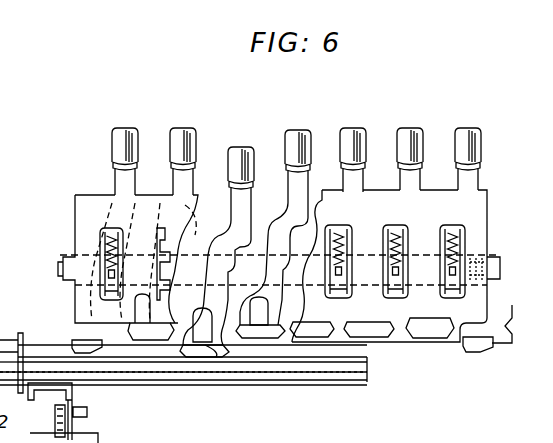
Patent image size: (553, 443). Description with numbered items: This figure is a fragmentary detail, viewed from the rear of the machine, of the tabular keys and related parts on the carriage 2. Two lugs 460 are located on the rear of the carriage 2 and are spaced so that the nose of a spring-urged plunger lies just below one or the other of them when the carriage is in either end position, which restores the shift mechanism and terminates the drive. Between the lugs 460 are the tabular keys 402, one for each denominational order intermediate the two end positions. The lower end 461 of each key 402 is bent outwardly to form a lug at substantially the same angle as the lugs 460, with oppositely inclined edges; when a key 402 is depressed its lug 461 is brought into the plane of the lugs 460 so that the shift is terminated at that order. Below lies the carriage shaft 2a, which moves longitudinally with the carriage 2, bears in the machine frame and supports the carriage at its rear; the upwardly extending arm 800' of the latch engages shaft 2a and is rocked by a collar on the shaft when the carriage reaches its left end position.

The tabular key 402 is at (240, 148).
The carriage 2 is at (417, 343).
The carriage shaft 2a is at (222, 378).
The lug 460 is at (80, 345).
The lower end (lug) of tabular key 461 is at (210, 357).
The upwardly extending arm of latch 800' is at (87, 413).